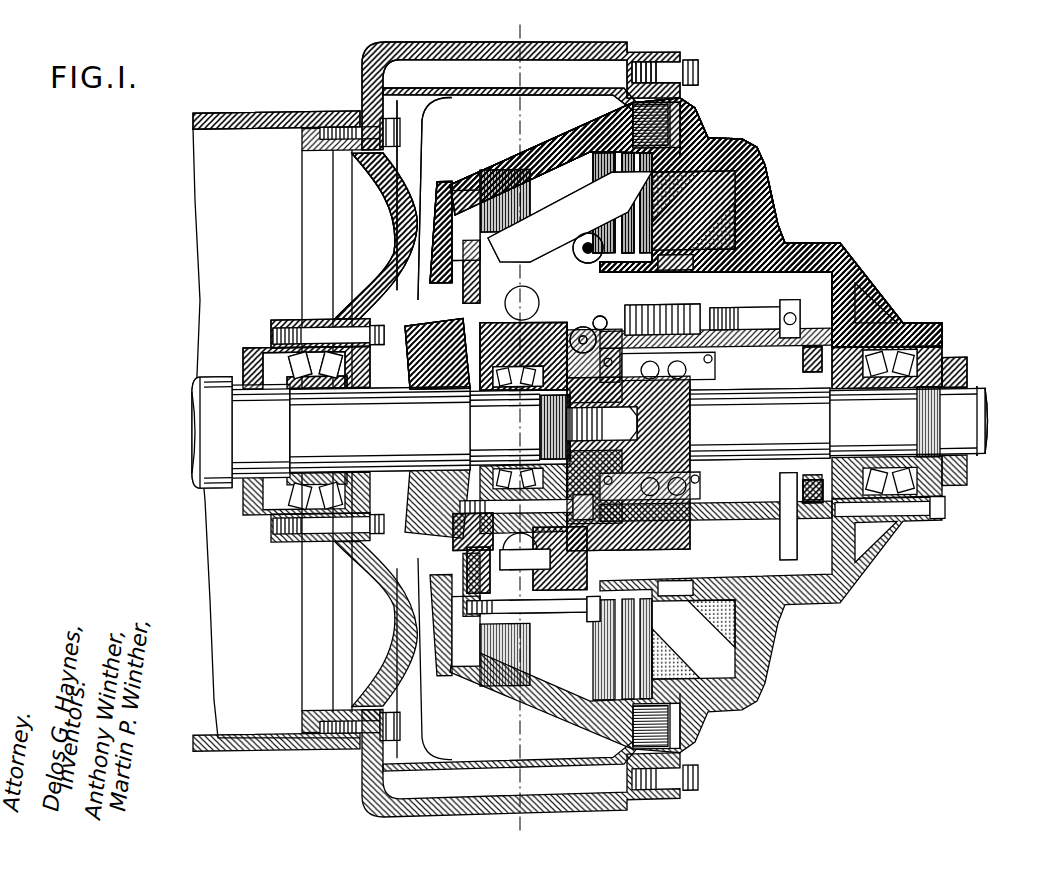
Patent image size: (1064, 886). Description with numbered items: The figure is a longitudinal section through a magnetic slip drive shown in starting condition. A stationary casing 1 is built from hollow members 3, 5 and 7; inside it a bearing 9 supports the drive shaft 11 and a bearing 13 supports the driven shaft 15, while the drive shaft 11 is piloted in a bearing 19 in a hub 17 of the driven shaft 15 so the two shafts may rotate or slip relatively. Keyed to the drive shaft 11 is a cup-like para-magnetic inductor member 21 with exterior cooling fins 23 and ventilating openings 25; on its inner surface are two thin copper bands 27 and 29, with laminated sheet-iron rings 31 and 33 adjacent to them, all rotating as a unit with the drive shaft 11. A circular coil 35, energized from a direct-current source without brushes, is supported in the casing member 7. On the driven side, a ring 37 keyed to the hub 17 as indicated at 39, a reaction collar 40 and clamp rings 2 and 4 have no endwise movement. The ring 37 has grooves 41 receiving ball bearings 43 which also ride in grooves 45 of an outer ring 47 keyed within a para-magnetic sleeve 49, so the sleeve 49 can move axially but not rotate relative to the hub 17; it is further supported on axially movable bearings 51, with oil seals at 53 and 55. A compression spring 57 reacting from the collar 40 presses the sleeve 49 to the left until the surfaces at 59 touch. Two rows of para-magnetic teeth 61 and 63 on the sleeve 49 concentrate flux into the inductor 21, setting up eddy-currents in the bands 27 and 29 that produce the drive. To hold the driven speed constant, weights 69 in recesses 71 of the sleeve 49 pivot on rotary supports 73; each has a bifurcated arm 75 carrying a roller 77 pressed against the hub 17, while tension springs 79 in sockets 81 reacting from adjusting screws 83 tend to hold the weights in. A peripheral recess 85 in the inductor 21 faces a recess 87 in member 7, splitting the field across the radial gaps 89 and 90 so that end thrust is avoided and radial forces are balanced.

The stationary casing 1 is at (370, 100).
The clamp ring 2 is at (440, 344).
The hollow member 3 is at (258, 135).
The clamp ring 4 is at (610, 45).
The hollow member 5 is at (470, 58).
The hollow member 7 is at (772, 218).
The bearing 9 is at (330, 337).
The drive shaft 11 is at (205, 436).
The bearing 13 is at (890, 365).
The driven shaft 15 is at (965, 438).
The hub 17 is at (450, 385).
The bearing 19 is at (505, 395).
The inductor member 21 is at (575, 180).
The cooling fins 23 is at (442, 134).
The ventilating openings 25 is at (440, 300).
The band 27 is at (455, 195).
The band 29 is at (565, 165).
The ring 31 is at (500, 180).
The ring 33 is at (615, 200).
The circular coil 35 is at (780, 252).
The ring 37 is at (470, 380).
The key 39 is at (487, 365).
The reaction collar 40 is at (812, 360).
The grooves 41 is at (440, 330).
The ball bearings 43 is at (521, 427).
The grooves 45 is at (436, 270).
The outer ring 47 is at (472, 250).
The para-magnetic sleeve 49 is at (800, 260).
The axially movable bearings 51 is at (670, 385).
The oil seals 53 is at (470, 560).
The oil seals 55 is at (612, 380).
The compression spring 57 is at (813, 515).
The contact surfaces 59 is at (455, 292).
The teeth 61 is at (478, 710).
The teeth 63 is at (555, 178).
The weights 69 is at (470, 215).
The recesses 71 is at (675, 264).
The rotary support 73 is at (575, 257).
The bifurcated arm 75 is at (598, 325).
The roller 77 is at (548, 395).
The tension springs 79 is at (645, 320).
The sockets 81 is at (735, 335).
The adjusting screws 83 is at (797, 325).
The peripheral recess 85 is at (668, 125).
The recess 87 is at (695, 130).
The radial gap 89 is at (630, 108).
The radial gap 90 is at (735, 145).